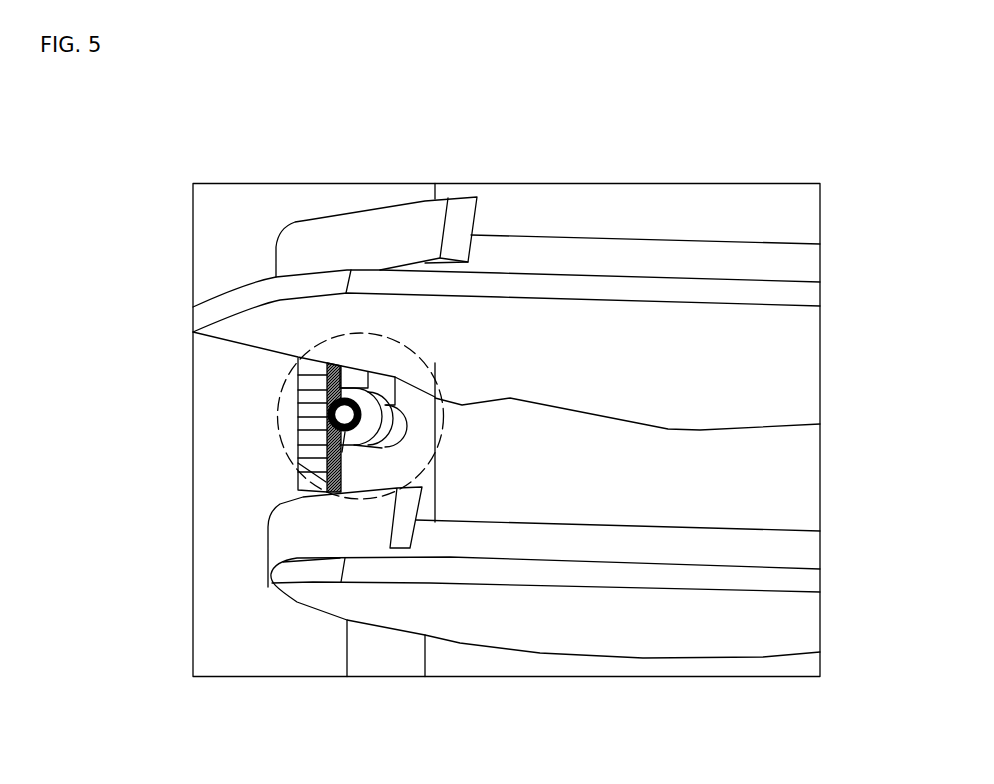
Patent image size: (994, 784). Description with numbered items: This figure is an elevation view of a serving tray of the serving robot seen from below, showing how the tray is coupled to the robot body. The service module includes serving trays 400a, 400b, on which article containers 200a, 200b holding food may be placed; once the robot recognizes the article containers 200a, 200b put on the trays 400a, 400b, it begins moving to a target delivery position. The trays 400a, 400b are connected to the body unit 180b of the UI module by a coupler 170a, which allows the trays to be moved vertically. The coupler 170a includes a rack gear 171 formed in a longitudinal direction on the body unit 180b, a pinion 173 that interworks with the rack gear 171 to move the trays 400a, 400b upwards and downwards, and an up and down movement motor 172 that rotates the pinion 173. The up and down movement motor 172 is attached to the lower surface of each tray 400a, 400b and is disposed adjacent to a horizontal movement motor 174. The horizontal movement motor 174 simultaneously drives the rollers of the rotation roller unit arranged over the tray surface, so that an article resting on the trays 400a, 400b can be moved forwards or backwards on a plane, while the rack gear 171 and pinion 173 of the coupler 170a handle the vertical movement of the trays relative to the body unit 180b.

The article container 200a is at (387, 235).
The article container 200b is at (370, 532).
The serving tray 400a is at (802, 373).
The serving tray 400b is at (802, 610).
The body unit 180b is at (233, 361).
The coupler 170a is at (276, 414).
The rack gear 171 is at (313, 463).
The up and down movement motor 172 is at (365, 423).
The pinion 173 is at (325, 487).
The horizontal movement motor 174 is at (410, 427).